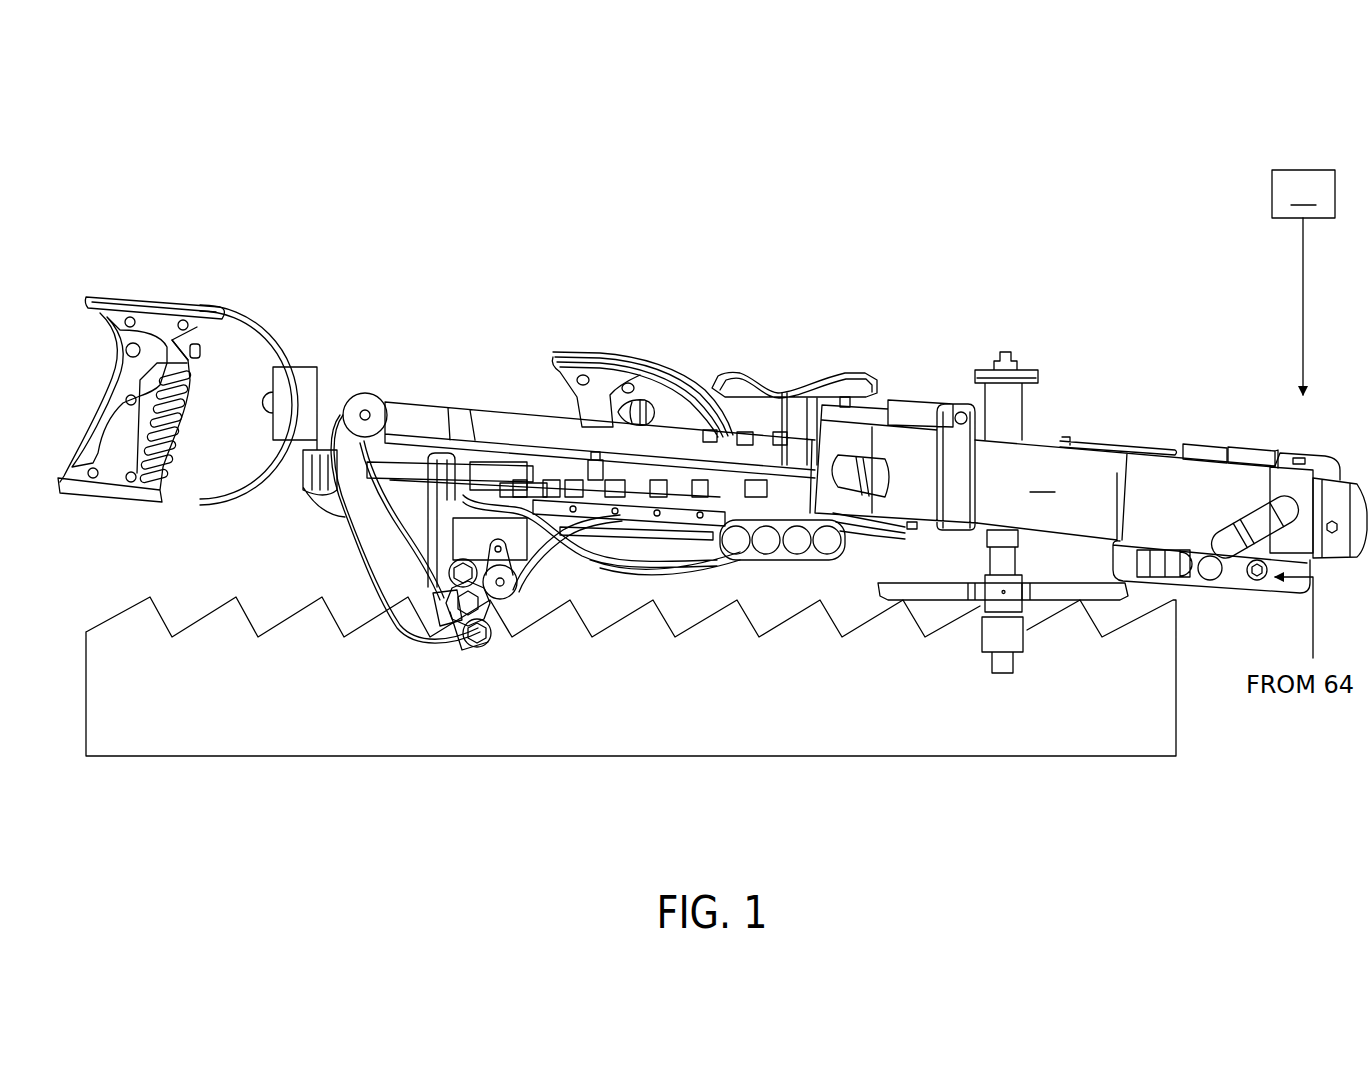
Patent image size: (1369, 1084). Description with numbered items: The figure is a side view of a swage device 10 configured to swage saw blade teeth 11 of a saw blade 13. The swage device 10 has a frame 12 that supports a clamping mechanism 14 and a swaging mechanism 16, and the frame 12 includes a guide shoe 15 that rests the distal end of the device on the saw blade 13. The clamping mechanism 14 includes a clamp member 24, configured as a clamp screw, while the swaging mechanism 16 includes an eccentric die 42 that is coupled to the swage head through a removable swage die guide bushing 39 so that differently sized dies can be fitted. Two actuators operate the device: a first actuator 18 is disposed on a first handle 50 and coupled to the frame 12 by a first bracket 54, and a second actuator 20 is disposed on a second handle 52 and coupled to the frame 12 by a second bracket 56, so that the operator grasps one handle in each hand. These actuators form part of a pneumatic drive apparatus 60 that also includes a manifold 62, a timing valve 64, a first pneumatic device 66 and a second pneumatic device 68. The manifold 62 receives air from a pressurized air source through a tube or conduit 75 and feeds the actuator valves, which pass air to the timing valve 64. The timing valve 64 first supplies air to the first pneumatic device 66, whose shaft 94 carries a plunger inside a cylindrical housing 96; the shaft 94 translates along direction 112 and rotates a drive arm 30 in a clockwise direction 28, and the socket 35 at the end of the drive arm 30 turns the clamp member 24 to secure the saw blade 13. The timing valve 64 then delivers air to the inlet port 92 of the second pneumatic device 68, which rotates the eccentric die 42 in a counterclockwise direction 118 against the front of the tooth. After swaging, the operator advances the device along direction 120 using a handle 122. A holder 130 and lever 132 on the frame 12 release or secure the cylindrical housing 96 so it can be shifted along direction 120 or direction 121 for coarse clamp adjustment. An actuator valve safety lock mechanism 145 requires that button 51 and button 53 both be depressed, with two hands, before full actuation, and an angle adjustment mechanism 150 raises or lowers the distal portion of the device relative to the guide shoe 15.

The swage device 10 is at (1025, 160).
The saw blade teeth 11 is at (1173, 627).
The frame 12 is at (307, 493).
The saw blade 13 is at (718, 713).
The clamping mechanism 14 is at (458, 650).
The guide shoe 15 is at (878, 602).
The swaging mechanism 16 is at (477, 545).
The first actuator 18 is at (195, 343).
The second actuator 20 is at (650, 413).
The clamp member 24 is at (466, 608).
The clockwise direction 28 is at (358, 383).
The drive arm 30 is at (411, 600).
The socket 35 is at (480, 632).
The swage die guide bushing 39 is at (537, 580).
The eccentric die 42 is at (500, 583).
The first handle 50 is at (105, 370).
The button 51 is at (194, 358).
The second handle 52 is at (572, 410).
The button 53 is at (652, 407).
The first bracket 54 is at (257, 330).
The second bracket 56 is at (683, 375).
The pneumatic drive apparatus 60 is at (1167, 385).
The manifold 62 is at (1177, 452).
The timing valve 64 is at (597, 452).
The first pneumatic device 66 is at (1062, 443).
The second pneumatic device 68 is at (1218, 446).
The tube or conduit 75 is at (1300, 278).
The inlet port 92 is at (1253, 575).
The shaft 94 is at (780, 396).
The cylindrical housing 96 is at (1157, 516).
The direction 112 is at (525, 433).
The counterclockwise direction 118 is at (550, 596).
The direction 120 is at (893, 249).
The direction 121 is at (557, 249).
The handle 122 is at (870, 388).
The holder 130 is at (958, 410).
The lever 132 is at (917, 403).
The actuator valve safety lock mechanism 145 is at (134, 343).
The angle adjustment mechanism 150 is at (1040, 372).